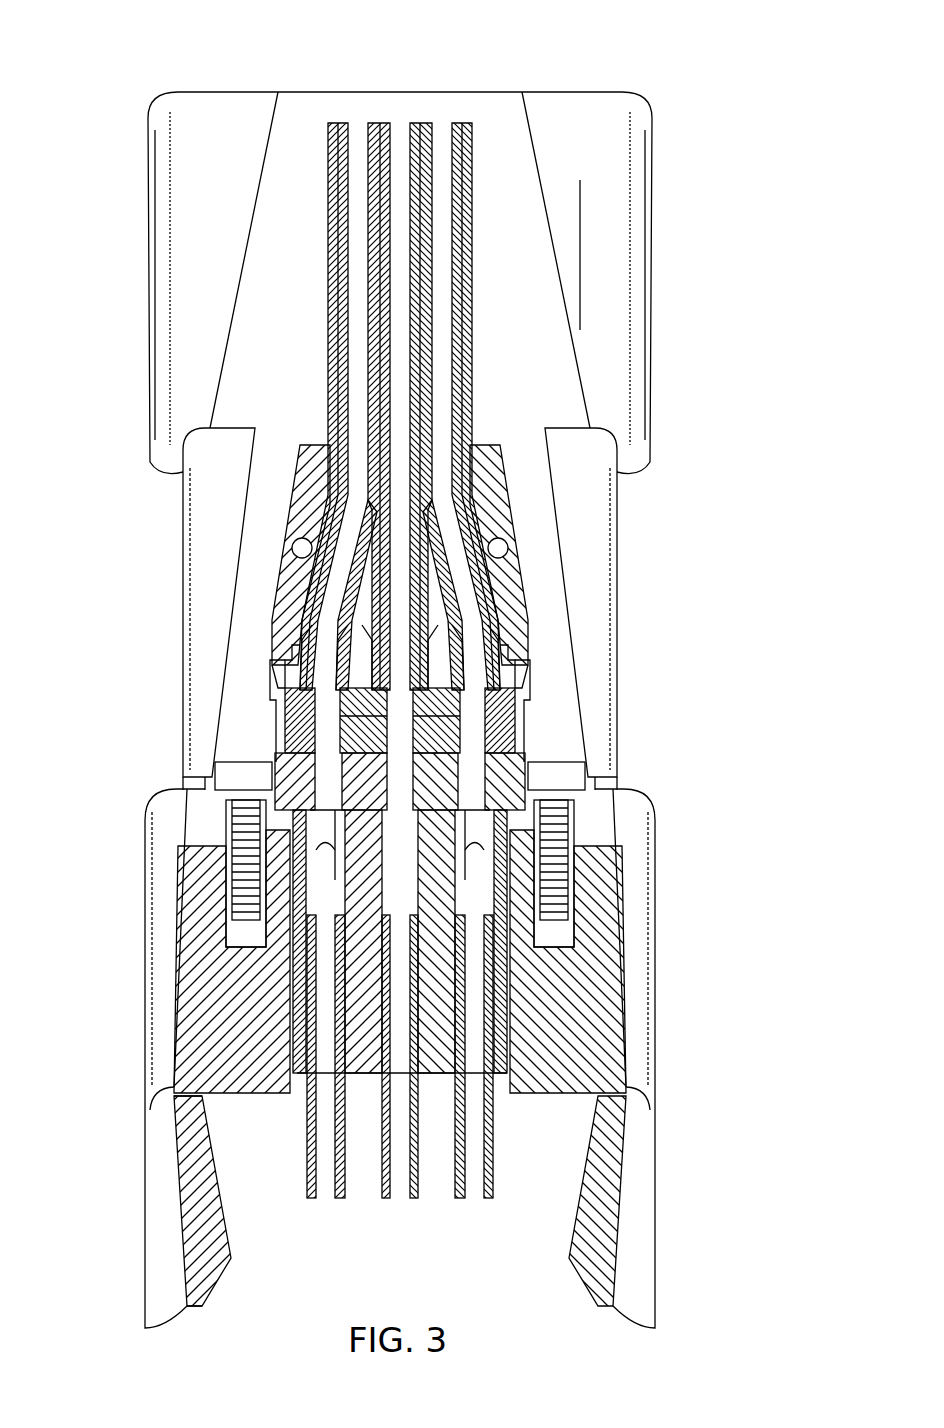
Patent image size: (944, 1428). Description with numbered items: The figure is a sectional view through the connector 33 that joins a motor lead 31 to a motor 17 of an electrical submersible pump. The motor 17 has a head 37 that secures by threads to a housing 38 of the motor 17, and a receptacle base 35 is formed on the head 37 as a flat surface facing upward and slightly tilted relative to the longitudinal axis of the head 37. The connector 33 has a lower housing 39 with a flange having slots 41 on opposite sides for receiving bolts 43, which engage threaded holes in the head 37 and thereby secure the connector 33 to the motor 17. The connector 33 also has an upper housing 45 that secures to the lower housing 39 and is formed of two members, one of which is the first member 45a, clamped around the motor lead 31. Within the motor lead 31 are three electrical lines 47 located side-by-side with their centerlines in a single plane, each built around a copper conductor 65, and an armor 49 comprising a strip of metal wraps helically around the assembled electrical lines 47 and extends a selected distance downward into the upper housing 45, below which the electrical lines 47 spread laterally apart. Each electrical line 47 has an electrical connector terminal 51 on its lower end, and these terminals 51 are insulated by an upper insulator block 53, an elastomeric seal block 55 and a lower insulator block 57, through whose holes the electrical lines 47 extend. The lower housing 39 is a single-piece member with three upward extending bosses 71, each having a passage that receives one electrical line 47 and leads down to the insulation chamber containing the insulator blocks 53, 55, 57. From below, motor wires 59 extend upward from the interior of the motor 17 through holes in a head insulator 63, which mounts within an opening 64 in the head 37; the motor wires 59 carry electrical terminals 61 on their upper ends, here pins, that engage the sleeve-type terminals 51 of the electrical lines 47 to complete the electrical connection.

The motor 17 is at (730, 99).
The motor lead 31 is at (322, 352).
The connector 33 is at (548, 702).
The receptacle base 35 is at (610, 832).
The head 37 is at (645, 1080).
The housing 38 is at (155, 1195).
The lower housing 39 is at (303, 668).
The slots 41 is at (530, 735).
The bolts 43 is at (565, 925).
The upper housing 45 is at (305, 497).
The first member 45a is at (487, 455).
The electrical lines 47 is at (357, 125).
The armor 49 is at (466, 318).
The electrical connector terminal 51 is at (230, 865).
The upper insulator block 53 is at (305, 695).
The elastomeric seal block 55 is at (300, 722).
The lower insulator block 57 is at (290, 765).
The motor wires 59 is at (315, 1152).
The electrical terminals 61 is at (300, 928).
The head insulator 63 is at (295, 1040).
The opening 64 is at (500, 1045).
The copper conductor 65 is at (354, 136).
The bosses 71 is at (520, 660).